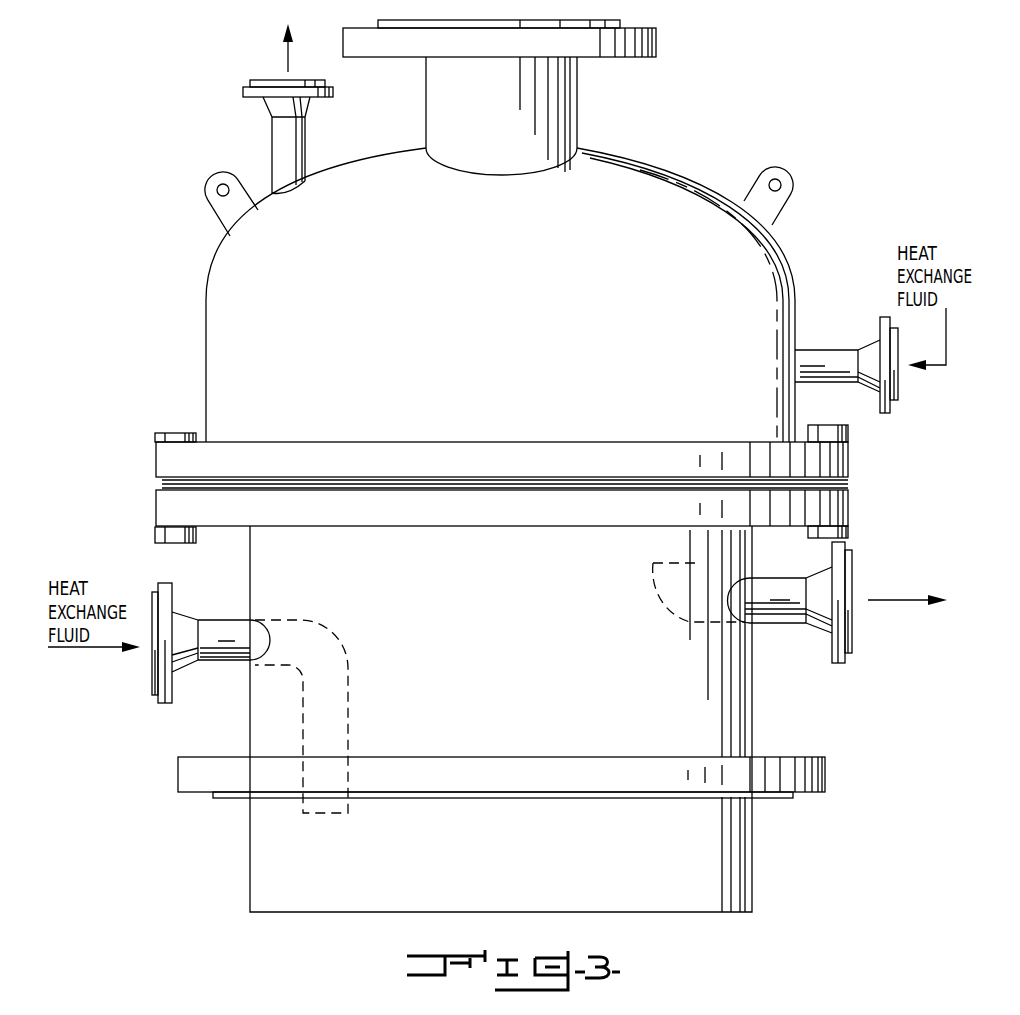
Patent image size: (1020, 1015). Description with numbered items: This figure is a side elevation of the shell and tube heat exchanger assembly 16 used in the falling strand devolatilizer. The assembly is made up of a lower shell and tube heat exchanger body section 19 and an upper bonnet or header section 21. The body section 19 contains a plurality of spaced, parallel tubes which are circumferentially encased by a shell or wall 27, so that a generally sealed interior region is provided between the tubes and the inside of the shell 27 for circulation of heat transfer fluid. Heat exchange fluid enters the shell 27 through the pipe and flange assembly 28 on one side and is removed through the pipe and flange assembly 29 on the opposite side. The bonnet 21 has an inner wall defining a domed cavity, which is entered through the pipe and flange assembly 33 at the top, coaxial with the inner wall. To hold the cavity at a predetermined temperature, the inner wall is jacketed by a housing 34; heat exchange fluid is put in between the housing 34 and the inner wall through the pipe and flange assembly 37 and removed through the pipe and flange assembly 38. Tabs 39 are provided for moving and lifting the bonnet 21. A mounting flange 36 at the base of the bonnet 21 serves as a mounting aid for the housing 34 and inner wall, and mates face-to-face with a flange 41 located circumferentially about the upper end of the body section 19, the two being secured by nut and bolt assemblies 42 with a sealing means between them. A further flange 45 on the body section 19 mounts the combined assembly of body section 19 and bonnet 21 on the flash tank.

The shell and tube heat exchanger assembly 16 is at (200, 307).
The shell and tube heat exchanger body section 19 is at (518, 649).
The bonnet or header section 21 is at (468, 311).
The shell or wall 27 is at (743, 722).
The pipe and flange assembly 28 is at (226, 667).
The pipe and flange assembly 29 is at (785, 626).
The pipe and flange assembly 33 is at (645, 57).
The housing 34 is at (776, 263).
The mounting flange 36 is at (850, 460).
The pipe and flange assembly 37 is at (828, 350).
The pipe and flange assembly 38 is at (275, 136).
The tabs 39 is at (204, 191).
The flange 41 is at (850, 503).
The nut and bolt assemblies 42 is at (173, 432).
The flange 45 is at (827, 770).